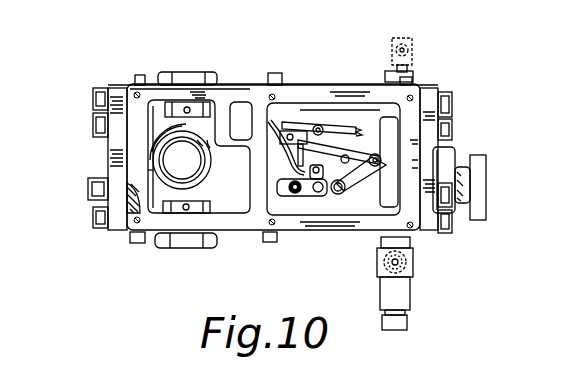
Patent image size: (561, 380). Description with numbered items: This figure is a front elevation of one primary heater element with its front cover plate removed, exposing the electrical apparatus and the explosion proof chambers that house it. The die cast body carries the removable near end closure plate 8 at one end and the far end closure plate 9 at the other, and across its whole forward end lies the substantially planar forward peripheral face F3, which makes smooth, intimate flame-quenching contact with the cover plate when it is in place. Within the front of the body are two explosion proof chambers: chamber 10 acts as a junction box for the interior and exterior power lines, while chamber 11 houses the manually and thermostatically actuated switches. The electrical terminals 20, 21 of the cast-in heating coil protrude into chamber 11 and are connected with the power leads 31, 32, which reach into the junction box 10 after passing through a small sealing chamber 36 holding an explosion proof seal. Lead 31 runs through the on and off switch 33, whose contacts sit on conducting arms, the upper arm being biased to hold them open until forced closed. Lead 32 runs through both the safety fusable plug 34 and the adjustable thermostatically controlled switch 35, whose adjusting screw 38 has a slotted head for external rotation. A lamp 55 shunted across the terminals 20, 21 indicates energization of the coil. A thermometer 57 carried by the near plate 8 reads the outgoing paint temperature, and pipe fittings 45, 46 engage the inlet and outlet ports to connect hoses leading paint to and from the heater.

The near end closure plate 8 is at (448, 160).
The far end closure plate 9 is at (120, 97).
The explosion proof chamber 10 is at (232, 203).
The explosion proof chamber 11 is at (340, 107).
The electrical terminal 20 is at (386, 151).
The electrical terminal 21 is at (336, 181).
The electrical power lead 31 is at (150, 150).
The electrical power lead 32 is at (155, 168).
The on and off switch 33 is at (357, 130).
The safety fusable plug 34 is at (366, 182).
The adjustable thermostatically controlled switch 35 is at (320, 197).
The sealing chamber 36 is at (241, 102).
The adjusting screw 38 is at (300, 195).
The pipe fitting 45 is at (412, 46).
The pipe fitting 46 is at (413, 270).
The lamp 55 is at (290, 140).
The thermometer 57 is at (487, 180).
The forward peripheral face F3 is at (148, 233).